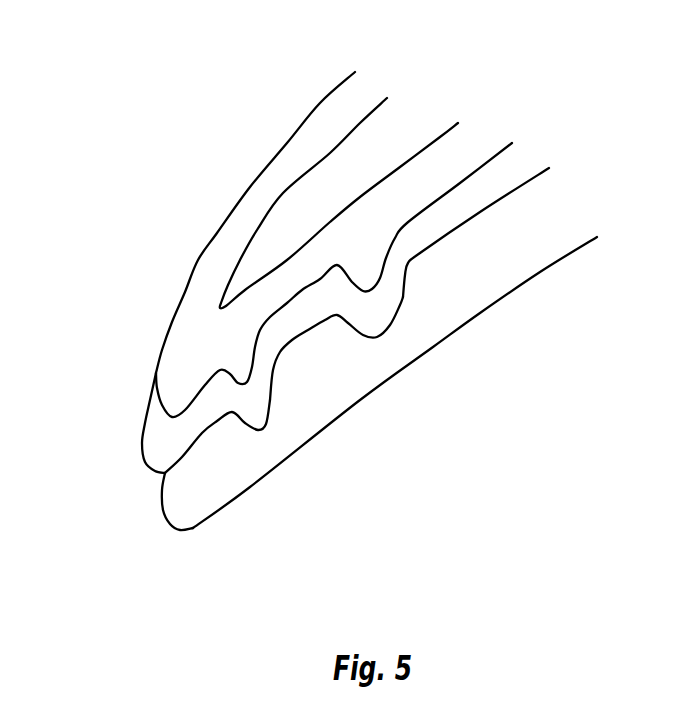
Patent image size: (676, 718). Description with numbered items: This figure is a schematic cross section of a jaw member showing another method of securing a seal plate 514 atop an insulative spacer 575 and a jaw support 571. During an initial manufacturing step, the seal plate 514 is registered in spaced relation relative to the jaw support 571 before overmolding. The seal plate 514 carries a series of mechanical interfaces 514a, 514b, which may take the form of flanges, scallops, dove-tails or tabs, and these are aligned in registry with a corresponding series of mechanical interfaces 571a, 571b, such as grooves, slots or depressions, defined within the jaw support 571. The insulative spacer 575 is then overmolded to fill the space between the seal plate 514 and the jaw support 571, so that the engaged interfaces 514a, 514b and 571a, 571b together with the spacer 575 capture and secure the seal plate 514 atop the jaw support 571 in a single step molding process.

The seal plate 514 is at (440, 160).
The mechanical interface 514a is at (410, 263).
The mechanical interface 514b is at (243, 367).
The jaw support 571 is at (490, 278).
The mechanical interface 571a is at (398, 290).
The mechanical interface 571b is at (247, 420).
The insulative spacer 575 is at (160, 438).